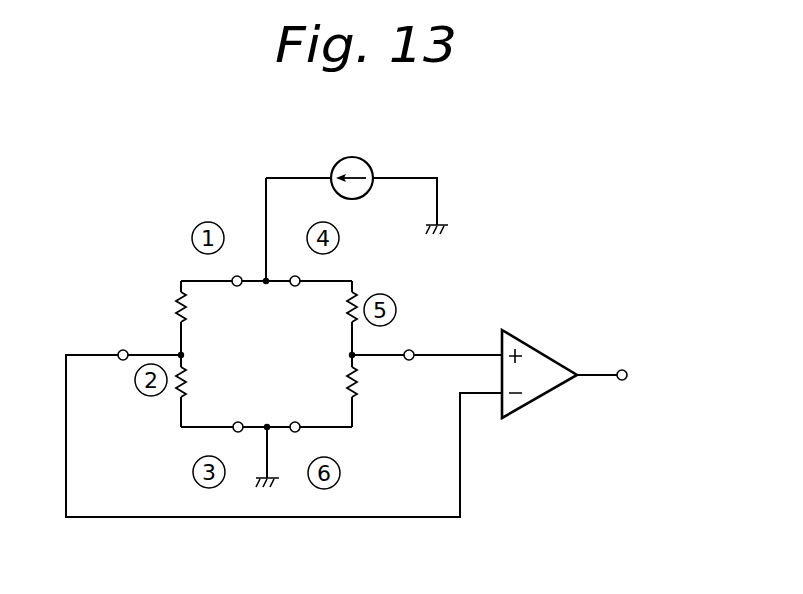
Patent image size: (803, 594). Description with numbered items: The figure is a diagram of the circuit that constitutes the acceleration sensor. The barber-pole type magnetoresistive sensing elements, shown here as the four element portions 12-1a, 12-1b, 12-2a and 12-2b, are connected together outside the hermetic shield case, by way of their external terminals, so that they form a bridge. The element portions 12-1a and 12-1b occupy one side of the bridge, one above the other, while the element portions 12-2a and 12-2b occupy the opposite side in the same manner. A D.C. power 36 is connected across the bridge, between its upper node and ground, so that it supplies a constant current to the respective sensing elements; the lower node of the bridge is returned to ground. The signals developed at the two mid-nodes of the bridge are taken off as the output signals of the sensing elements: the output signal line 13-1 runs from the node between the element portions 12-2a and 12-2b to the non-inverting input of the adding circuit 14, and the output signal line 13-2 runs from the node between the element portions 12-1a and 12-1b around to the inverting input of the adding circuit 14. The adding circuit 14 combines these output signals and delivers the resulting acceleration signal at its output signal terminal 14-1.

The D.C. power 36 is at (367, 161).
The magnetoresistive sensing element 12-1a is at (172, 314).
The magnetoresistive sensing element 12-1b is at (176, 394).
The magnetoresistive sensing element 12-2a is at (362, 289).
The magnetoresistive sensing element 12-2b is at (357, 392).
The output signal line 13-1 is at (462, 356).
The output signal line 13-2 is at (462, 478).
The adding circuit 14 is at (540, 350).
The output signal terminal 14-1 is at (622, 381).